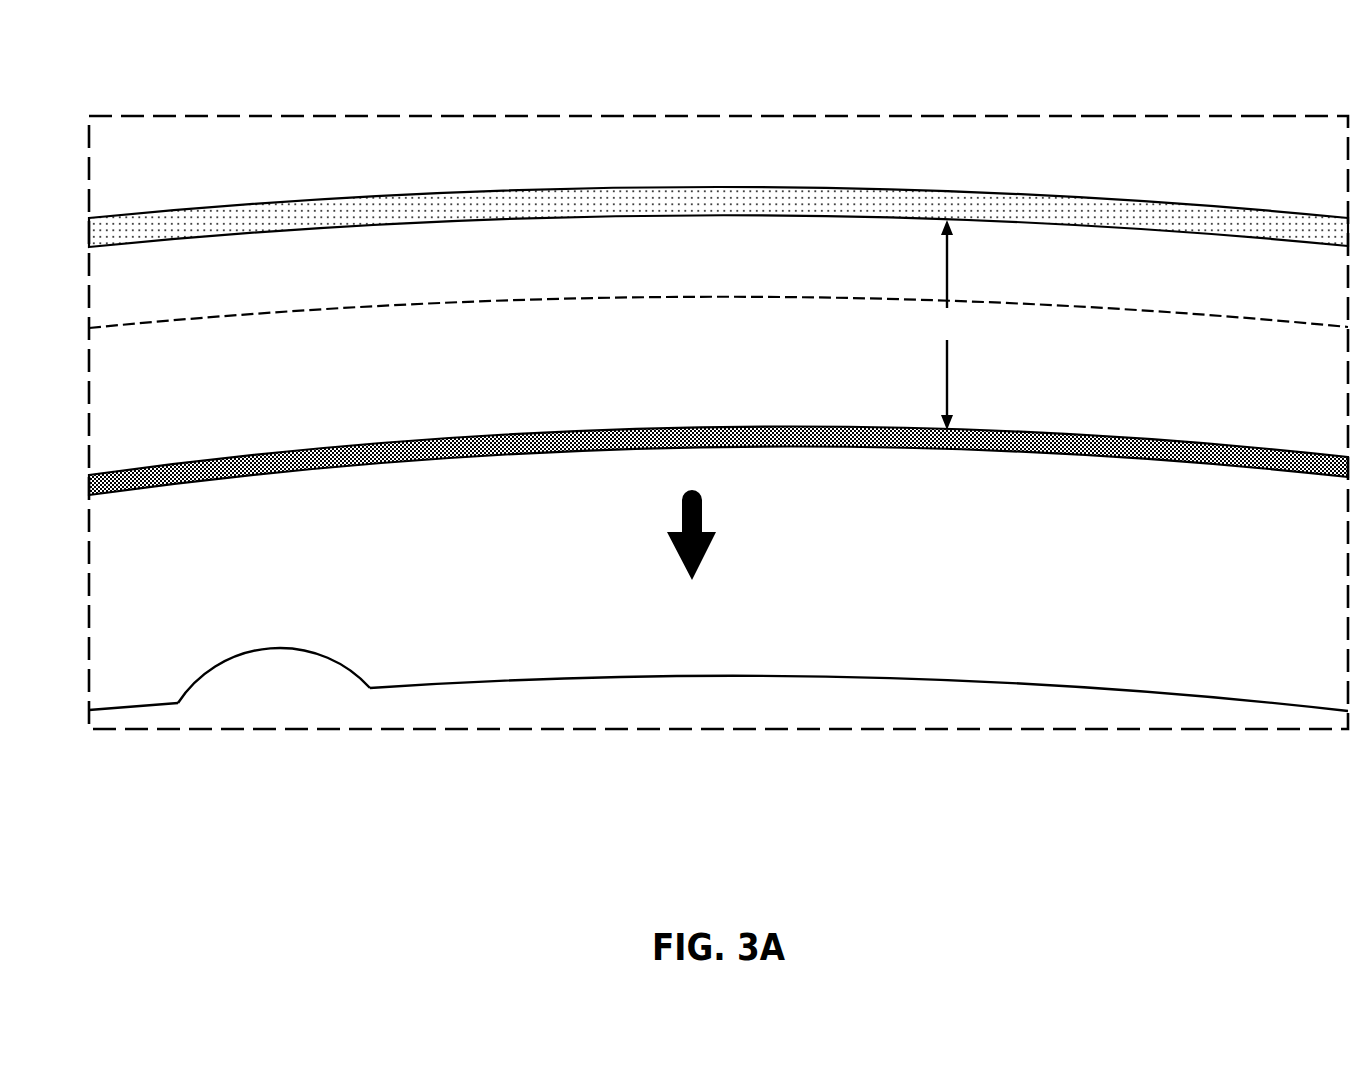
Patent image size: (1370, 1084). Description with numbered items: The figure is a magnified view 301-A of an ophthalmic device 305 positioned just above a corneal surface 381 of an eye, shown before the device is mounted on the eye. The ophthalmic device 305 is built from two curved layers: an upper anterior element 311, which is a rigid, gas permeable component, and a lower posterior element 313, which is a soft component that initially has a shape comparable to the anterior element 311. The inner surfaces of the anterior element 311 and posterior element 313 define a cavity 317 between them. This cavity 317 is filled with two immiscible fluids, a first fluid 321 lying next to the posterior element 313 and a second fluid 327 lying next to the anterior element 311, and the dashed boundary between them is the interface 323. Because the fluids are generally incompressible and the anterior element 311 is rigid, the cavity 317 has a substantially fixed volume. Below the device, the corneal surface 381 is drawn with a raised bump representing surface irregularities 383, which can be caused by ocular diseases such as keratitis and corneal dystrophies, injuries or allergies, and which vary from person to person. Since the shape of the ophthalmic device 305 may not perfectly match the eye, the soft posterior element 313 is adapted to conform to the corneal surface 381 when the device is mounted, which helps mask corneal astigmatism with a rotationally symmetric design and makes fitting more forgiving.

The magnified view 301-A is at (152, 64).
The ophthalmic device 305 is at (138, 188).
The anterior element 311 is at (1285, 230).
The posterior element 313 is at (1296, 460).
The cavity 317 is at (946, 325).
The first fluid 321 is at (158, 406).
The interface 323 is at (636, 310).
The second fluid 327 is at (158, 296).
The corneal surface 381 is at (827, 716).
The surface irregularities 383 is at (297, 694).